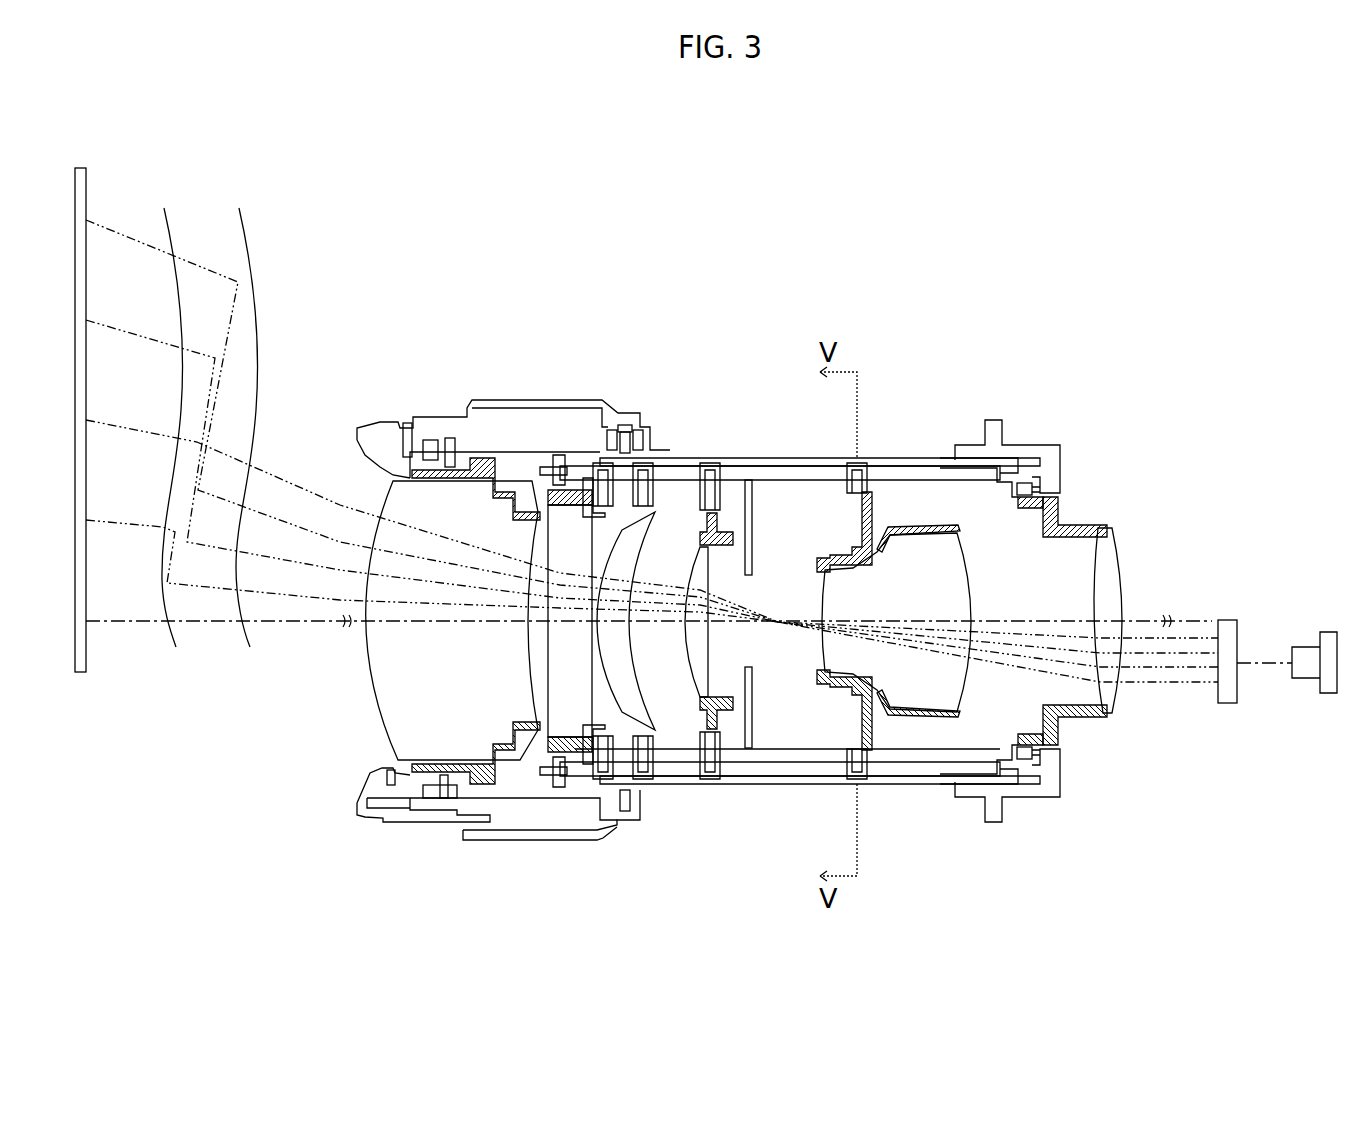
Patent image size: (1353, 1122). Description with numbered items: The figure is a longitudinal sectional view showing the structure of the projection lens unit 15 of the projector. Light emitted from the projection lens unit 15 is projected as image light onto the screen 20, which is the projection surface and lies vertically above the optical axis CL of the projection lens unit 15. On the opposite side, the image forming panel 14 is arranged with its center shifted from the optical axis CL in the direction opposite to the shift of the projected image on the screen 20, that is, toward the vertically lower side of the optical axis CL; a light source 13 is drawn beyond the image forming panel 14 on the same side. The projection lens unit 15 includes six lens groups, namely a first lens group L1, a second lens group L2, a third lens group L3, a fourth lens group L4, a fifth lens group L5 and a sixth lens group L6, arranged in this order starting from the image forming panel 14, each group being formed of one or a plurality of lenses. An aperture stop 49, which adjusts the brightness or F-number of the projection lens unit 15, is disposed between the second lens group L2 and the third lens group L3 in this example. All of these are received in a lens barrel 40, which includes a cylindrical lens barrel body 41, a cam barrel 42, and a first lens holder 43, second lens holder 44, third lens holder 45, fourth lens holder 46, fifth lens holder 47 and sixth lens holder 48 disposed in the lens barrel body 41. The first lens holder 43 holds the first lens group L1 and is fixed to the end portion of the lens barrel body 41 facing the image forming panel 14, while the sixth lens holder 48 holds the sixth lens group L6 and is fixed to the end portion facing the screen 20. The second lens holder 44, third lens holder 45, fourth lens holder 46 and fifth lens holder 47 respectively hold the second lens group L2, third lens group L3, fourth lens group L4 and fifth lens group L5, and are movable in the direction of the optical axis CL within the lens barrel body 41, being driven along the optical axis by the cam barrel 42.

The screen 20 is at (79, 168).
The projection lens unit 15 is at (798, 352).
The light source 13 is at (1307, 645).
The image forming panel 14 is at (1227, 620).
The optical axis CL is at (1178, 620).
The lens barrel 40 is at (1022, 440).
The lens barrel body 41 is at (788, 477).
The cam barrel 42 is at (830, 460).
The first lens holder 43 is at (1088, 522).
The second lens holder 44 is at (910, 527).
The third lens holder 45 is at (730, 547).
The fourth lens holder 46 is at (687, 480).
The fifth lens holder 47 is at (577, 480).
The sixth lens holder 48 is at (530, 453).
The aperture stop 49 is at (752, 717).
The first lens group L1 is at (1122, 673).
The second lens group L2 is at (910, 697).
The third lens group L3 is at (705, 650).
The fourth lens group L4 is at (660, 695).
The fifth lens group L5 is at (600, 697).
The sixth lens group L6 is at (373, 683).